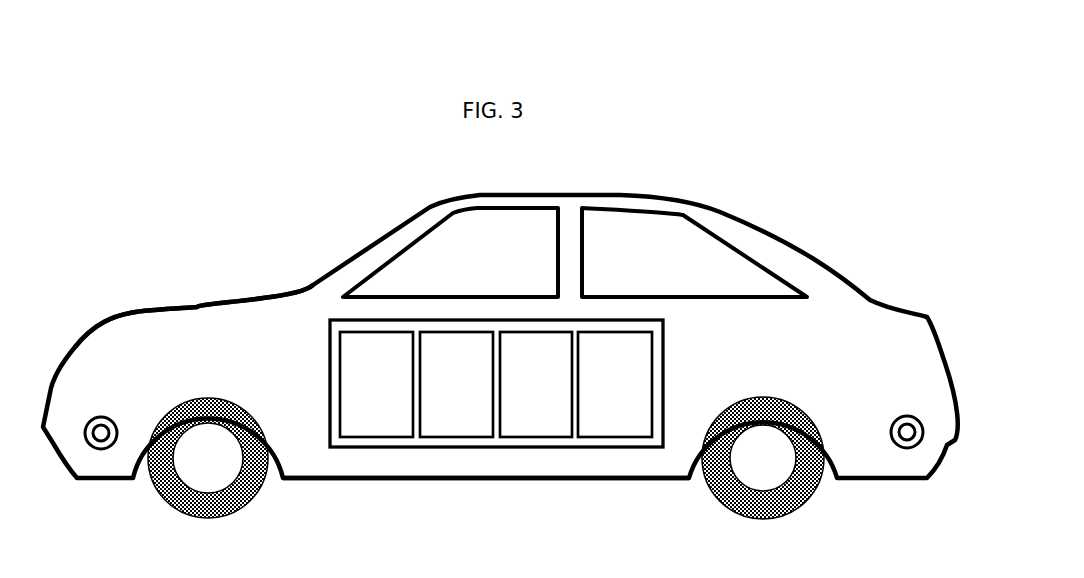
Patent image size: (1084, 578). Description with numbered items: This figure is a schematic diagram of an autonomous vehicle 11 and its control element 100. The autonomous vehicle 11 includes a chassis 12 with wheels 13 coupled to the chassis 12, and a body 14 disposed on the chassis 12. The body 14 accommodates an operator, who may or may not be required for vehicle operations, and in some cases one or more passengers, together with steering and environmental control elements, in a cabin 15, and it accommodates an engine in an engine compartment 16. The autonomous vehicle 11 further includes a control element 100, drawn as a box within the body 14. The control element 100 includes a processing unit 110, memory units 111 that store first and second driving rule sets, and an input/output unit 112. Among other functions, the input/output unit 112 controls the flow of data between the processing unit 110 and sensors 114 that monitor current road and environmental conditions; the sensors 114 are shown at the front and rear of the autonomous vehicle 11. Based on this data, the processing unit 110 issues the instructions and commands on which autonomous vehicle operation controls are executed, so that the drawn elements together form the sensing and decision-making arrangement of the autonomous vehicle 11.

The autonomous vehicle 11 is at (725, 212).
The chassis 12 is at (343, 482).
The wheels 13 is at (173, 497).
The body 14 is at (316, 352).
The cabin 15 is at (475, 269).
The engine compartment 16 is at (198, 362).
The control element 100 is at (663, 358).
The processing unit 110 is at (360, 369).
The memory units 111 is at (439, 369).
The input/output (I/O) unit 112 is at (517, 369).
The sensors 114 is at (595, 369).